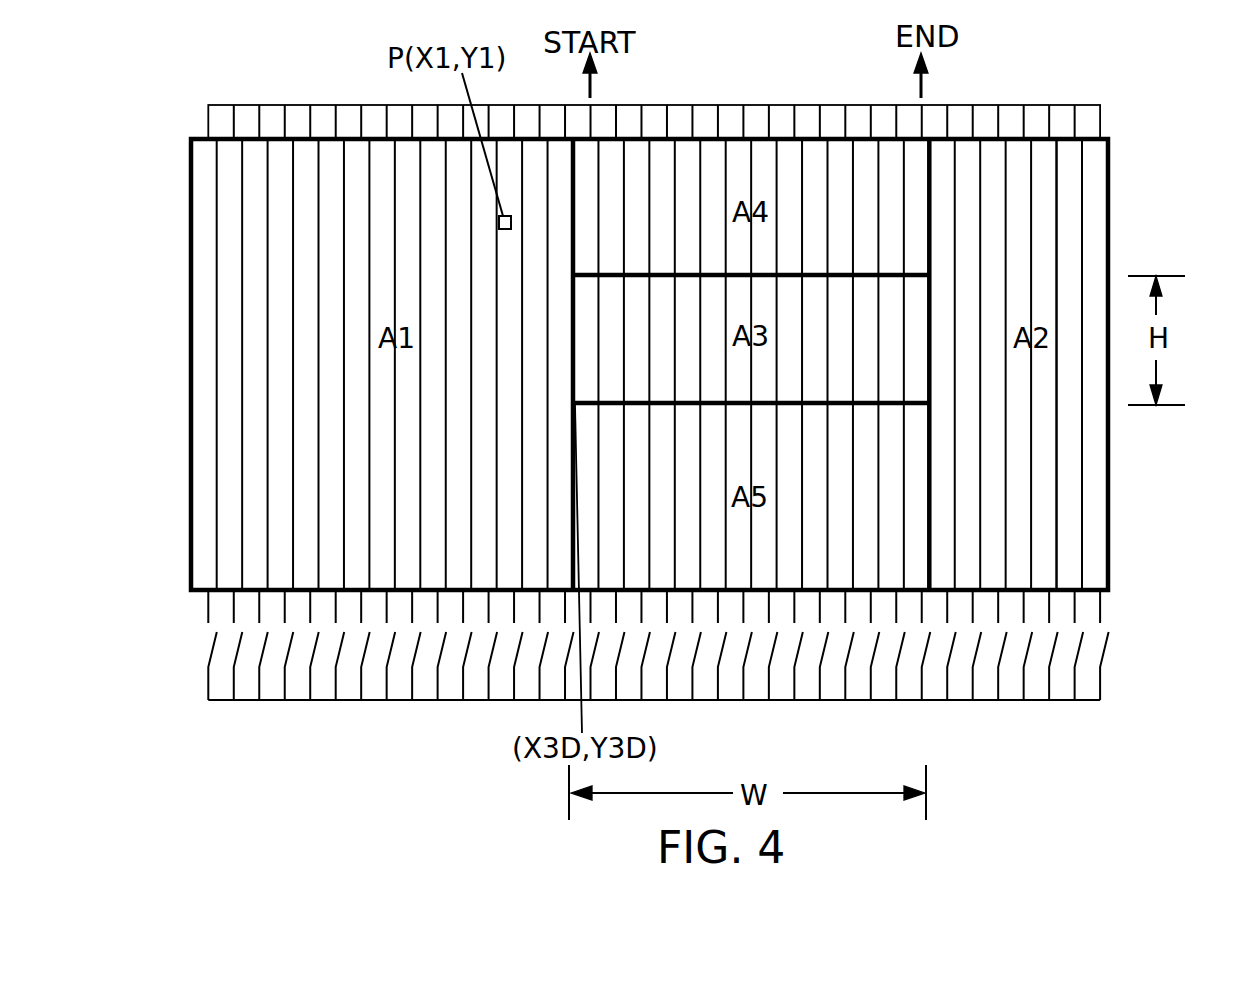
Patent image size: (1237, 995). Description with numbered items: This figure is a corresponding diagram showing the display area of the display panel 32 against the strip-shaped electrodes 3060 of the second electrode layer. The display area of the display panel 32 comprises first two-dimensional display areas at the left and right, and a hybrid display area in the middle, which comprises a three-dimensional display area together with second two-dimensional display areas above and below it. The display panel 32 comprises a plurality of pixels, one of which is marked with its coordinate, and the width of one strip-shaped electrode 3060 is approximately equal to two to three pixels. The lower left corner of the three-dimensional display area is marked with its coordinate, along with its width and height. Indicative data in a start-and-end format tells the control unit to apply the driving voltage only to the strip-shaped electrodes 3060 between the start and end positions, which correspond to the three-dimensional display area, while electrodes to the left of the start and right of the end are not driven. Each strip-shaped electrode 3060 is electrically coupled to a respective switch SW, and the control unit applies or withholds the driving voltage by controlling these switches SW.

The display panel 32 is at (1118, 192).
The strip-shaped electrode 3060 is at (1068, 513).
The switch SW is at (1103, 647).